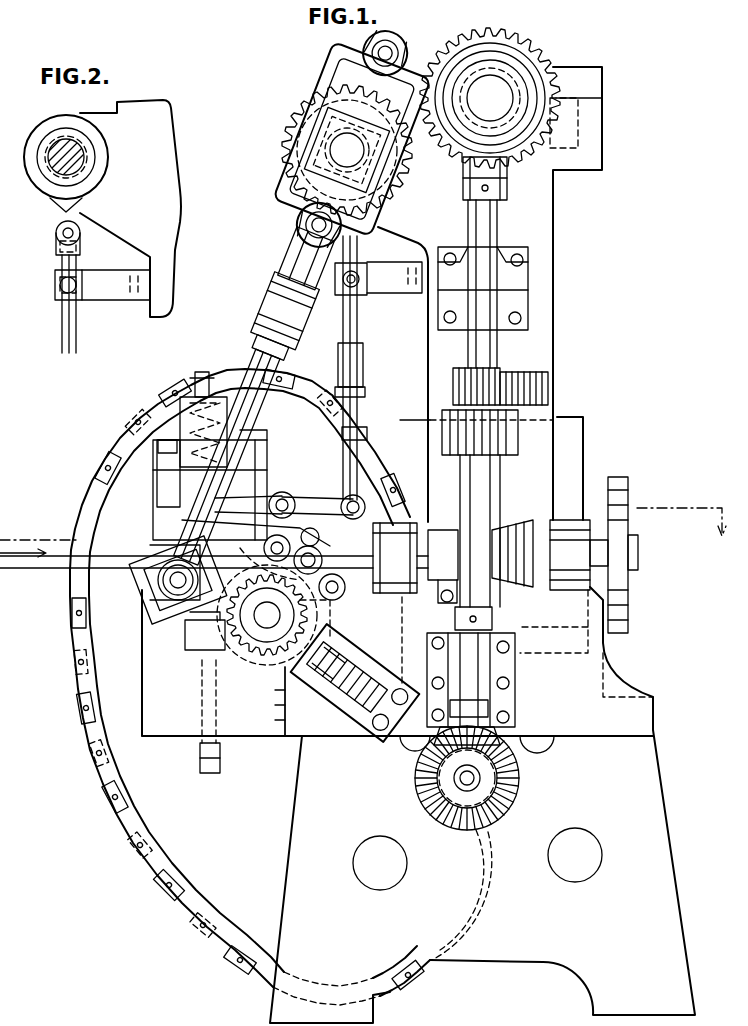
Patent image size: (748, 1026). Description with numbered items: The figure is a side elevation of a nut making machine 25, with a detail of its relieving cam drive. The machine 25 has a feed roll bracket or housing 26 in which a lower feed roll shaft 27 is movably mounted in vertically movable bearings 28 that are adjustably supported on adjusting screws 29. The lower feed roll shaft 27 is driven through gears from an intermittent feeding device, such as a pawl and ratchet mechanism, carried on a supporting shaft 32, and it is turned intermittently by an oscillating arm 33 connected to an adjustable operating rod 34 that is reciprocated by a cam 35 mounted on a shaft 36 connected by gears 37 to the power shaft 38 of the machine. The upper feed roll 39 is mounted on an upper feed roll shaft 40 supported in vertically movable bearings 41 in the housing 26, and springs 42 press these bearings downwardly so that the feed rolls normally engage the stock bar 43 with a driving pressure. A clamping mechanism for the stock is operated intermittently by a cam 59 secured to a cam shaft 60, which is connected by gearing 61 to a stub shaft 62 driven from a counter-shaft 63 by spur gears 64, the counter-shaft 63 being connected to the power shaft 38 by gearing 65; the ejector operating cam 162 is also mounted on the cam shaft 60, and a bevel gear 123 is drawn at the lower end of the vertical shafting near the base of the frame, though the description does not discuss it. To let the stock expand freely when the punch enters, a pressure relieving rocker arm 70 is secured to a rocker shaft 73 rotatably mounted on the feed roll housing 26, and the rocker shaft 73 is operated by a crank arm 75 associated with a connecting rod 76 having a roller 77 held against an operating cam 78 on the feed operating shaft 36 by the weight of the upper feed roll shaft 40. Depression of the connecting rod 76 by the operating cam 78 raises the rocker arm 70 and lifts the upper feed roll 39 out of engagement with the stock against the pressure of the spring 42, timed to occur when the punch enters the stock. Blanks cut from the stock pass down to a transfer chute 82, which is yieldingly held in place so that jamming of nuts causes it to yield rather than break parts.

In FIG. 1, the machine 25 is at (587, 680).
In FIG. 1, the feed roll housing 26 is at (253, 727).
In FIG. 1, the lower feed roll shaft 27 is at (207, 627).
In FIG. 1, the vertically movable bearings 28 is at (203, 623).
In FIG. 1, the adjusting screws 29 is at (202, 763).
In FIG. 1, the supporting shaft 32 is at (258, 640).
In FIG. 1, the oscillating arm 33 is at (150, 607).
In FIG. 1, the adjustable operating rod 34 is at (258, 353).
In FIG. 1, the cam 35 is at (300, 100).
In FIG. 1, the shaft 36 is at (345, 152).
In FIG. 2, the shaft 36 is at (75, 158).
In FIG. 1, the gears 37 is at (418, 190).
In FIG. 1, the power shaft 38 is at (493, 96).
In FIG. 1, the upper feed roll 39 is at (170, 483).
In FIG. 1, the upper feed roll shaft 40 is at (178, 508).
In FIG. 1, the vertically movable bearings 41 is at (240, 502).
In FIG. 1, the springs 42 is at (160, 402).
In FIG. 1, the stock bar 43 is at (30, 570).
In FIG. 1, the cam 59 is at (448, 528).
In FIG. 1, the cam shaft 60 is at (412, 545).
In FIG. 1, the gearing 61 is at (512, 582).
In FIG. 1, the stub shaft 62 is at (560, 522).
In FIG. 1, the counter-shaft 63 is at (493, 362).
In FIG. 1, the spur gears 64 is at (500, 370).
In FIG. 1, the gearing 65 is at (512, 152).
In FIG. 1, the pressure relieving rocker arm 70 is at (350, 517).
In FIG. 1, the rocker shaft 73 is at (282, 498).
In FIG. 1, the crank arm 75 is at (310, 500).
In FIG. 1, the connecting rod 76 is at (360, 322).
In FIG. 2, the connecting rod 76 is at (77, 344).
In FIG. 2, the roller 77 is at (54, 240).
In FIG. 2, the operating cam 78 is at (78, 200).
In FIG. 1, the transfer chute 82 is at (158, 872).
In FIG. 1, the bevel gear 123 is at (500, 778).
In FIG. 1, the cam 162 is at (628, 612).